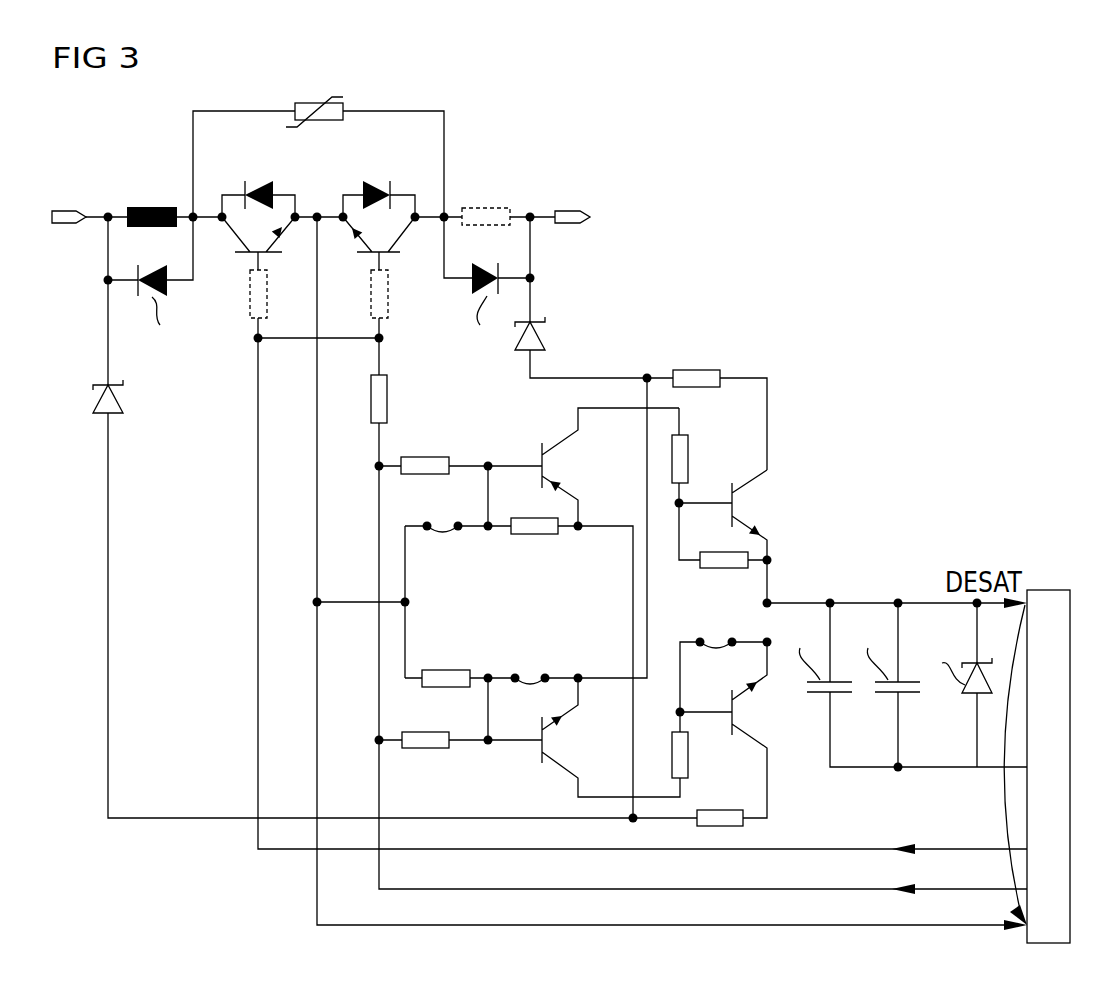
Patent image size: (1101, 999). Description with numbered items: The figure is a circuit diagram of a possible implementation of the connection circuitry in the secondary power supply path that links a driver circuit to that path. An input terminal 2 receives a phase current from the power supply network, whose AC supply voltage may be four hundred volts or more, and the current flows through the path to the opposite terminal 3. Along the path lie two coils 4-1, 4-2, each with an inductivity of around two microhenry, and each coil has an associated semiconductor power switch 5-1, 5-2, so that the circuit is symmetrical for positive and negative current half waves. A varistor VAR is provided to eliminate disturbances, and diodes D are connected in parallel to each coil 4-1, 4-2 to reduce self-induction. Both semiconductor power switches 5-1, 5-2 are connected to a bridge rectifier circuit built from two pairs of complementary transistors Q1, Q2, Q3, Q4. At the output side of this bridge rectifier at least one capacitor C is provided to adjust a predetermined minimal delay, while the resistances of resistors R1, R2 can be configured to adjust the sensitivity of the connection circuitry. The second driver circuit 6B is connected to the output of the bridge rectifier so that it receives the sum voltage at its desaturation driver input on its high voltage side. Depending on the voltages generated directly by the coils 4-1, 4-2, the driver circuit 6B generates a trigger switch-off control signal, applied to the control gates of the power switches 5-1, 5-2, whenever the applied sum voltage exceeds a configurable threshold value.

The input terminal 2 is at (60, 211).
The second terminal 3 is at (563, 211).
The coil 4-1 is at (150, 207).
The coil 4-2 is at (490, 208).
The semiconductor power switch 5-1 is at (255, 193).
The semiconductor power switch 5-2 is at (378, 192).
The second driver circuit 6B is at (1046, 589).
The varistor VAR is at (316, 101).
The diode D is at (550, 492).
The capacitor C is at (910, 685).
The resistor R1 is at (697, 368).
The resistor R2 is at (718, 809).
The transistor Q1 is at (553, 462).
The transistor Q2 is at (740, 505).
The transistor Q3 is at (553, 745).
The transistor Q4 is at (745, 710).